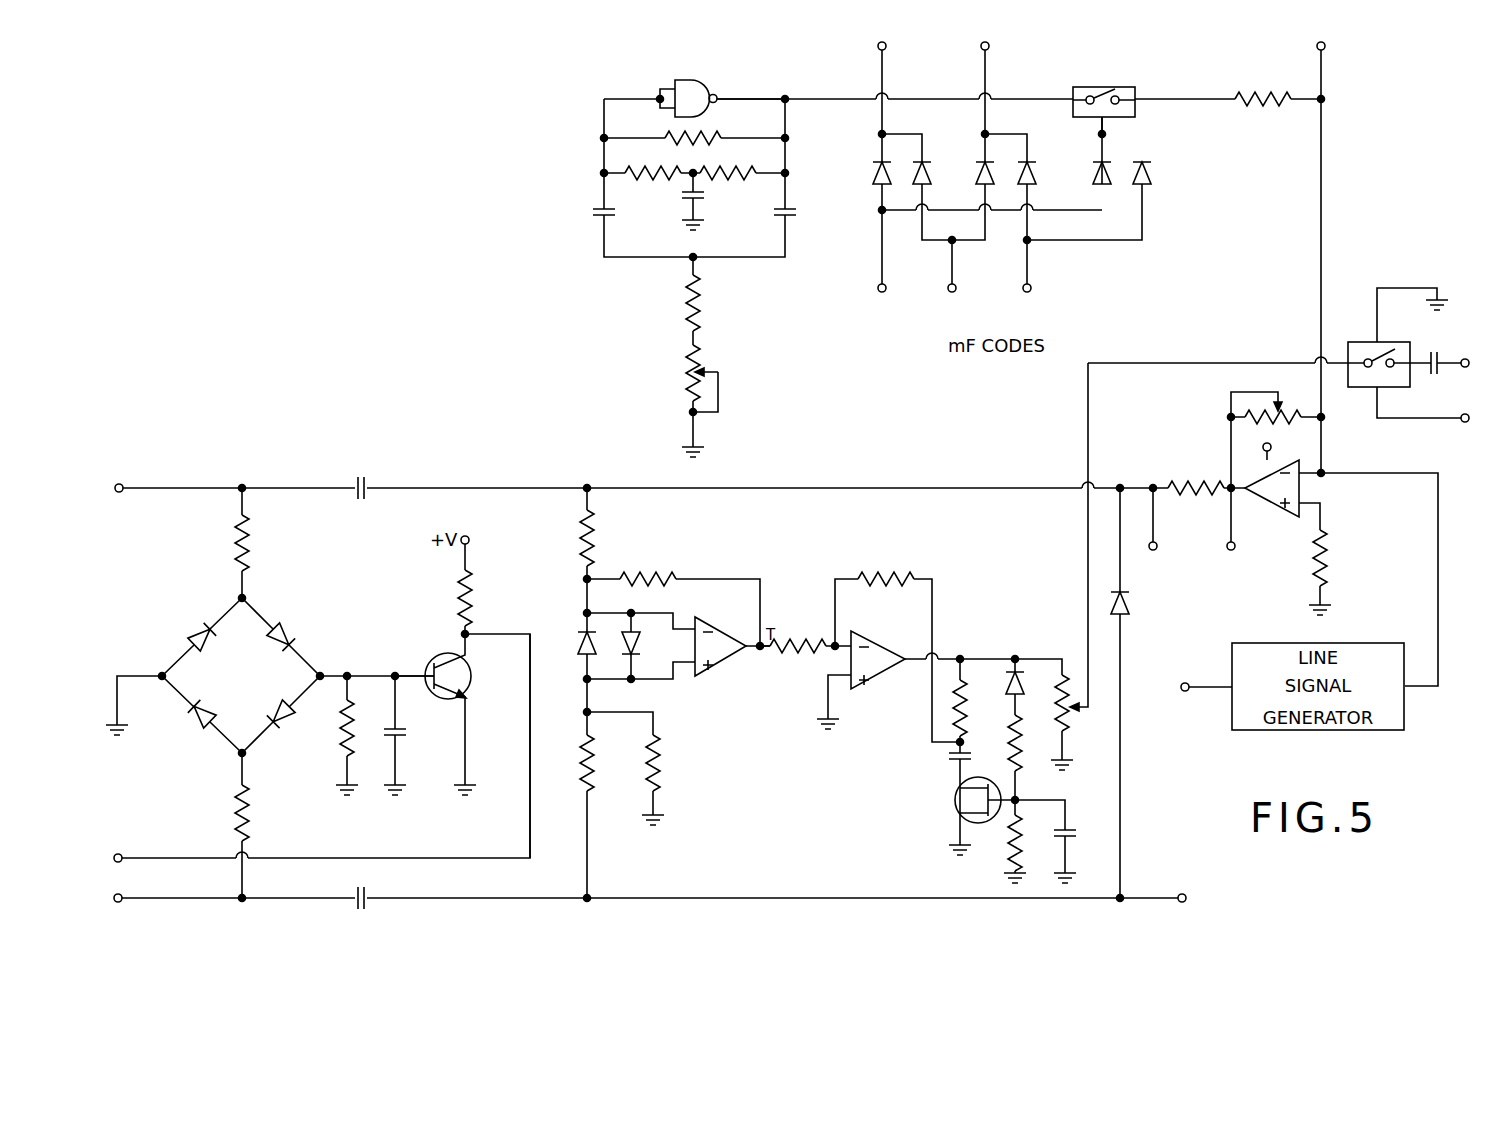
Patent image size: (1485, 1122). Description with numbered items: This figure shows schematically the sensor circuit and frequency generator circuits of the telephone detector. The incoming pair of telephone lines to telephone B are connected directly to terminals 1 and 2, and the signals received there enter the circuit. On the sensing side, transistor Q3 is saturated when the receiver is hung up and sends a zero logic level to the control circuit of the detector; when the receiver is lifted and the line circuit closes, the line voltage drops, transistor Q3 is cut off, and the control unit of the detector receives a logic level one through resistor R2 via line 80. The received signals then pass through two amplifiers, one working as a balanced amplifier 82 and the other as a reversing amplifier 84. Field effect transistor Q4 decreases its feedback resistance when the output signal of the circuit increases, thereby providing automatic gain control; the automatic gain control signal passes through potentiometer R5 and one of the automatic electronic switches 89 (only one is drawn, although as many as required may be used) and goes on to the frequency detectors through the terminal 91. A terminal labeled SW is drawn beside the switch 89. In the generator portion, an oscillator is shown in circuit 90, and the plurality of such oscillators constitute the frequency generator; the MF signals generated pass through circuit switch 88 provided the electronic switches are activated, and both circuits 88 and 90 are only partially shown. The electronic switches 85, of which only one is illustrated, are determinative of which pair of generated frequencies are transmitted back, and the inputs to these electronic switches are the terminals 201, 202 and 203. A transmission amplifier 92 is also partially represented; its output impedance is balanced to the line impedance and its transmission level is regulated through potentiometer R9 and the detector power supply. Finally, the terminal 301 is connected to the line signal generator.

The terminal 1 is at (121, 484).
The terminal 2 is at (123, 901).
The line 80 is at (121, 853).
The balanced amplifier 82 is at (721, 667).
The reversing amplifier 84 is at (878, 680).
The electronic switch 85 is at (1092, 86).
The circuit switch 88 is at (999, 94).
The automatic electronic switch 89 is at (1362, 340).
The oscillator circuit 90 is at (593, 123).
The terminal 91 is at (1463, 357).
The transmission amplifier 92 is at (1270, 506).
The terminal 201 is at (878, 291).
The terminal 202 is at (948, 291).
The terminal 203 is at (1023, 291).
The terminal 301 is at (1183, 683).
The resistor R2 is at (472, 597).
The potentiometer R5 is at (1077, 713).
The potentiometer R9 is at (1297, 412).
The transistor Q3 is at (451, 714).
The field effect transistor Q4 is at (963, 757).
The switch terminal SW is at (1465, 423).